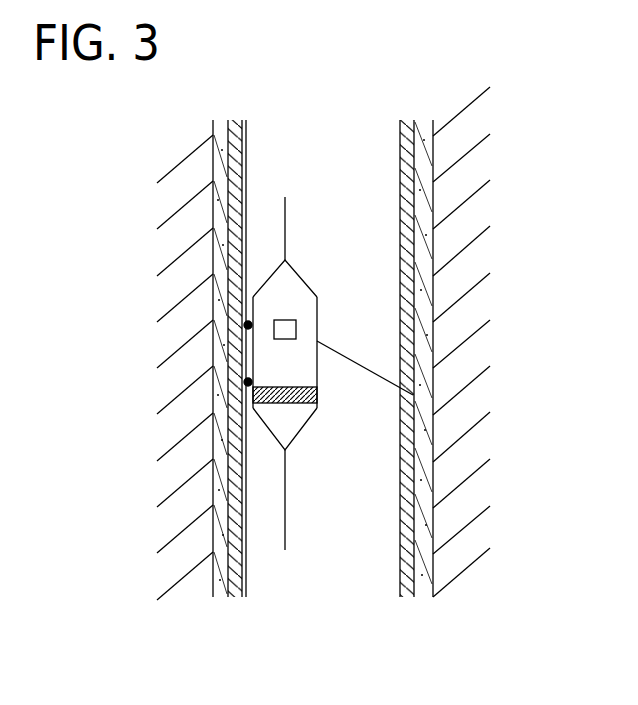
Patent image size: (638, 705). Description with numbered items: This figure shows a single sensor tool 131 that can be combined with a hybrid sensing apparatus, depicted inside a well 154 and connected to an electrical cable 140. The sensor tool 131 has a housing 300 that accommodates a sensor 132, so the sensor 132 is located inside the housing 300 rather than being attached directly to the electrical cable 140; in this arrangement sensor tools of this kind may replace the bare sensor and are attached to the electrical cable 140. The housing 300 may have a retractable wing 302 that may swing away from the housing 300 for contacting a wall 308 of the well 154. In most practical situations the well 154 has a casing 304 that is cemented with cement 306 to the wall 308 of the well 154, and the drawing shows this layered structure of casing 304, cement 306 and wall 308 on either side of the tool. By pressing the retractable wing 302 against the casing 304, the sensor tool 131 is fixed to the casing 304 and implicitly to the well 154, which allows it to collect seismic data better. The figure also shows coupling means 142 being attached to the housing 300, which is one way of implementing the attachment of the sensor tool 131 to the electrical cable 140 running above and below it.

The sensor tool 131 is at (300, 277).
The sensor 132 is at (274, 339).
The electrical cable 140 is at (287, 222).
The coupling means 142 is at (293, 405).
The well 154 is at (251, 148).
The housing 300 is at (317, 312).
The retractable wing 302 is at (372, 372).
The casing 304 is at (400, 160).
The cement 306 is at (423, 563).
The wall 308 is at (433, 518).